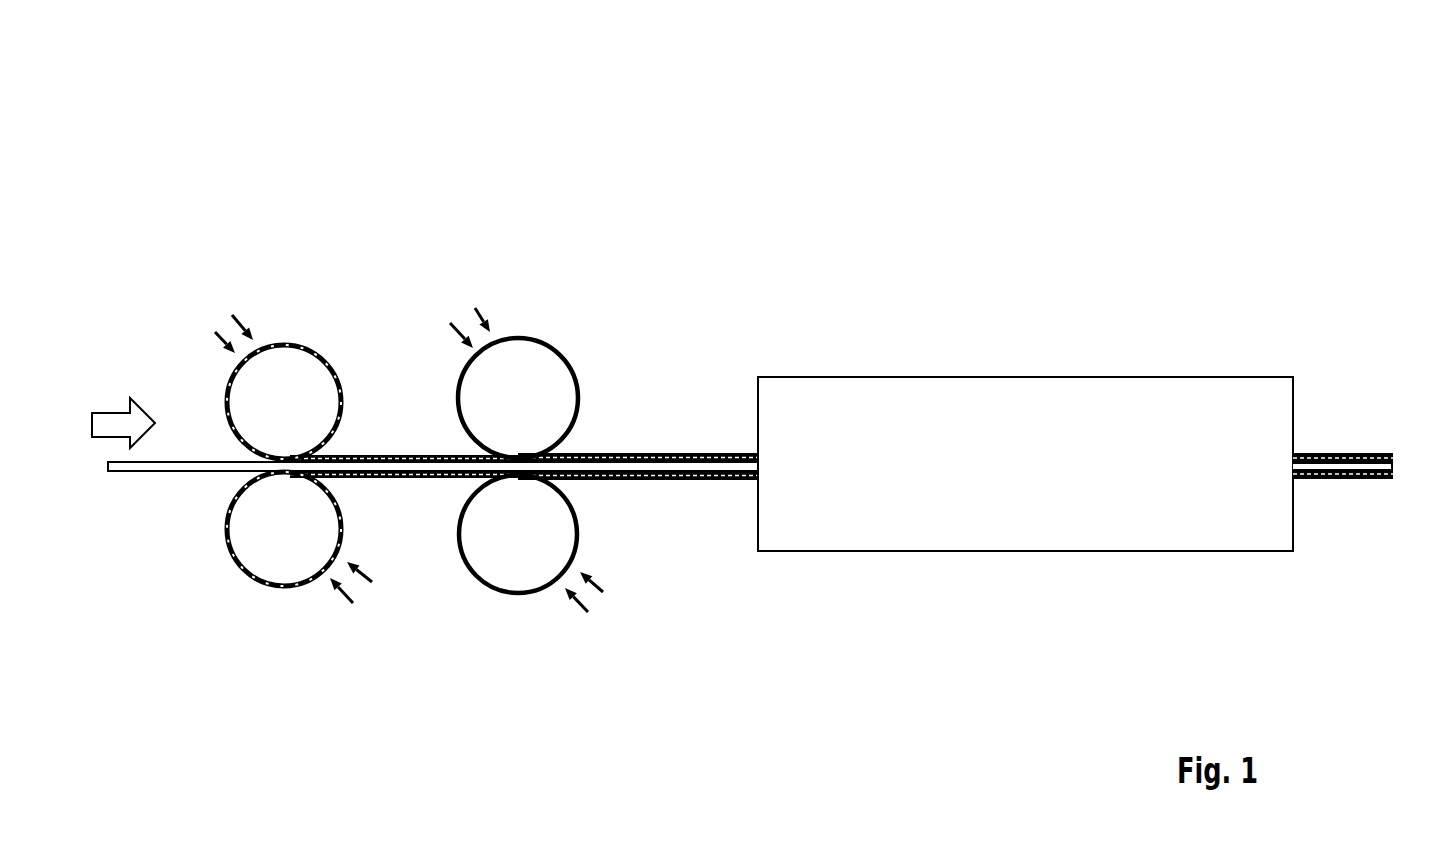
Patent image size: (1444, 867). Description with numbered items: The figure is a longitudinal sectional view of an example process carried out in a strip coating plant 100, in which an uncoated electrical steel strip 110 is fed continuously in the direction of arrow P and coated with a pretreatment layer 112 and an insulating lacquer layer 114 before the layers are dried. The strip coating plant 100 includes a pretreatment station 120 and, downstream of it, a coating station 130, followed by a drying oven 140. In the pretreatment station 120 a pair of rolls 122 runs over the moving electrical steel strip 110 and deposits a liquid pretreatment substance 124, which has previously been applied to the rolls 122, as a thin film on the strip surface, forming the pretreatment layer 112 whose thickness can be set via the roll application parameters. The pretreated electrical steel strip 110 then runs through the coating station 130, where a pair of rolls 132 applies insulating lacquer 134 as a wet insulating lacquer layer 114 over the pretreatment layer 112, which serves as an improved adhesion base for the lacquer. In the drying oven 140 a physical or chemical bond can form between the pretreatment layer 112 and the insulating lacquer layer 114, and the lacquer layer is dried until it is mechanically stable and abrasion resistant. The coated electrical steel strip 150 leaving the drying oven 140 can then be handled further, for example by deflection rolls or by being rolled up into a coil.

The strip coating plant 100 is at (920, 170).
The arrow P is at (112, 416).
The electrical steel strip 110 is at (157, 471).
The pretreatment layer 112 is at (397, 456).
The insulating lacquer layer 114 is at (677, 453).
The pretreatment station 120 is at (293, 255).
The roll 122 is at (305, 372).
The liquid pretreatment substance 124 is at (232, 315).
The coating station 130 is at (548, 250).
The roll 132 is at (543, 360).
The insulating lacquer 134 is at (475, 308).
The drying oven 140 is at (1025, 322).
The coated electrical steel strip 150 is at (1358, 417).